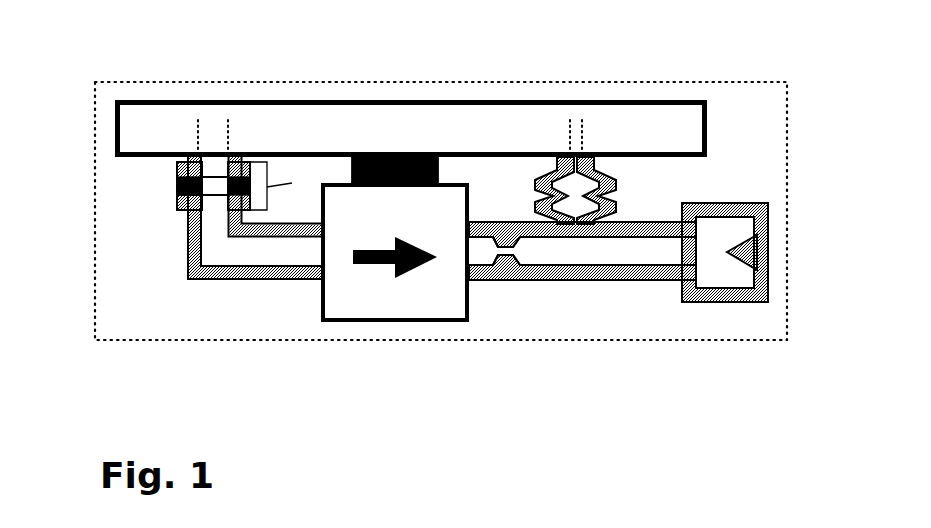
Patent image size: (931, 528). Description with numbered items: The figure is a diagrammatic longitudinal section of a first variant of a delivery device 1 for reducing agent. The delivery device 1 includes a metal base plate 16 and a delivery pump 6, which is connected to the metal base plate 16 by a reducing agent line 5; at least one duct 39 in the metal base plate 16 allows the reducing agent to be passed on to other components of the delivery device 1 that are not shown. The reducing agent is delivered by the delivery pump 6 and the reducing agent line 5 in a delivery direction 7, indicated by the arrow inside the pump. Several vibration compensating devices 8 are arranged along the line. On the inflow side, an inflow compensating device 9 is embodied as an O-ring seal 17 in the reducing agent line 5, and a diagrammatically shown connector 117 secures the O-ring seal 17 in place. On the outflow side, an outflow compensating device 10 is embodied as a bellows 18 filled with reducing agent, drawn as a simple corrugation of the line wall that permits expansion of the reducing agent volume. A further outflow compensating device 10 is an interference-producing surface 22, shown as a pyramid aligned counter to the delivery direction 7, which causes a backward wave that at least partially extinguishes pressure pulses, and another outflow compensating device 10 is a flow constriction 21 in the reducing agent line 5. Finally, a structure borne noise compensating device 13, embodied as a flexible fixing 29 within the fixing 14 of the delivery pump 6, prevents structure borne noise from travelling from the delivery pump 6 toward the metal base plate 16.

The delivery device 1 is at (137, 82).
The metal base plate 16 is at (127, 132).
The duct 39 is at (226, 108).
The reducing agent line 5 is at (522, 279).
The interference-producing surface 22 is at (768, 293).
The flow constriction 21 is at (500, 262).
The bellows 18 is at (530, 155).
The inflow compensating device 9 is at (177, 198).
The O-ring seal 17 is at (177, 207).
The vibration compensating device 8 is at (177, 188).
The outflow compensating device 10 is at (590, 155).
The flexible fixing 29 is at (355, 155).
The fixing of the delivery pump 14 is at (373, 155).
The structure borne noise compensating device 13 is at (430, 155).
The delivery pump 6 is at (387, 320).
The delivery direction 7 is at (412, 272).
The connector 117 is at (283, 184).